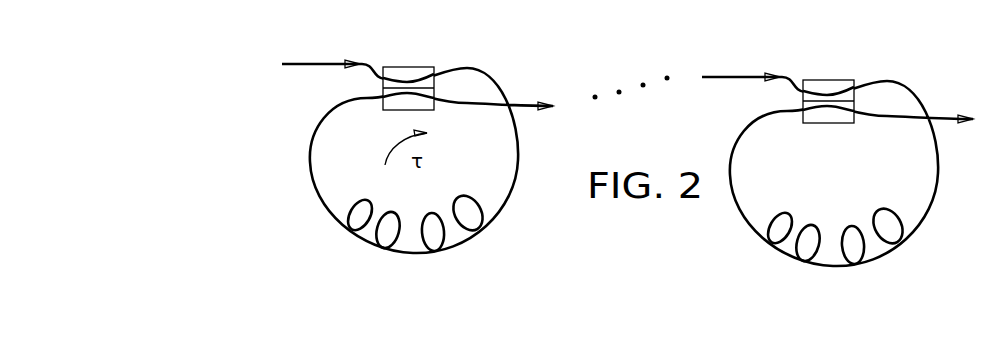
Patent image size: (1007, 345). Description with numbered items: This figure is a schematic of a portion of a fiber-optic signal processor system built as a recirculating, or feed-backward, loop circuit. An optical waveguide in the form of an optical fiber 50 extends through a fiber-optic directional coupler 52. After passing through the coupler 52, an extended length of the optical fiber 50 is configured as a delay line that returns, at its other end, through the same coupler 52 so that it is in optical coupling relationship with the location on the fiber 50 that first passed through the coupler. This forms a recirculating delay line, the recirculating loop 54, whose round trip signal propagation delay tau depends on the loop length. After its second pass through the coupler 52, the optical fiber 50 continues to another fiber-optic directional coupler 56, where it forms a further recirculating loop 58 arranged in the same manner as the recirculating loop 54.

The optical fiber 50 is at (323, 63).
The fiber-optic directional coupler 52 is at (402, 65).
The recirculating loop 54 is at (373, 258).
The fiber-optic directional coupler 56 is at (828, 79).
The recirculating loop 58 is at (796, 283).